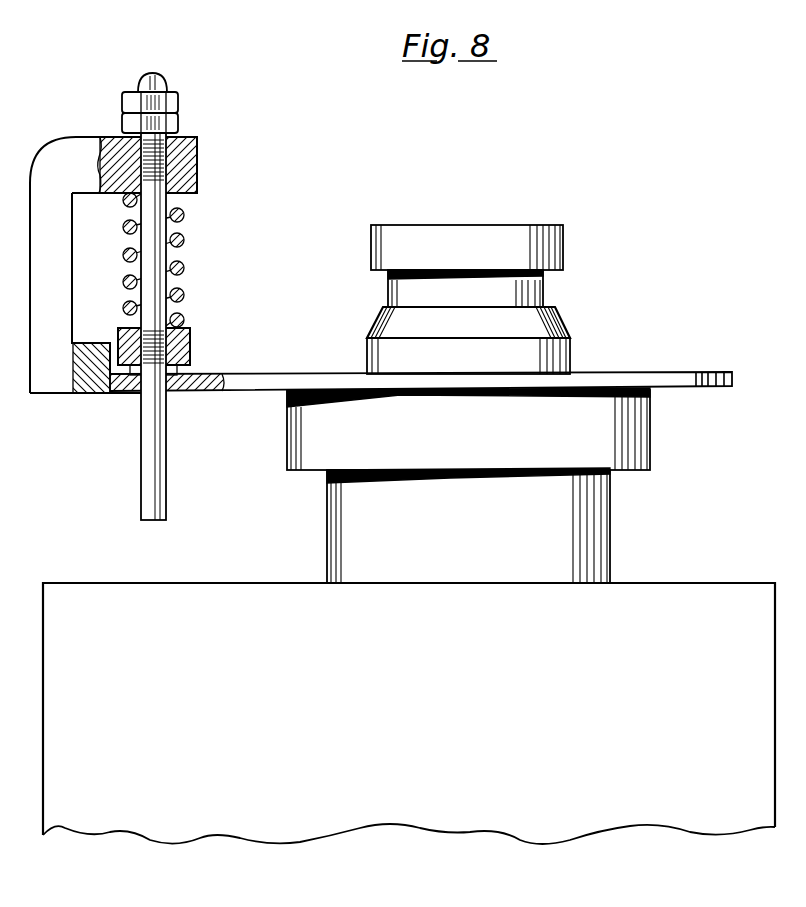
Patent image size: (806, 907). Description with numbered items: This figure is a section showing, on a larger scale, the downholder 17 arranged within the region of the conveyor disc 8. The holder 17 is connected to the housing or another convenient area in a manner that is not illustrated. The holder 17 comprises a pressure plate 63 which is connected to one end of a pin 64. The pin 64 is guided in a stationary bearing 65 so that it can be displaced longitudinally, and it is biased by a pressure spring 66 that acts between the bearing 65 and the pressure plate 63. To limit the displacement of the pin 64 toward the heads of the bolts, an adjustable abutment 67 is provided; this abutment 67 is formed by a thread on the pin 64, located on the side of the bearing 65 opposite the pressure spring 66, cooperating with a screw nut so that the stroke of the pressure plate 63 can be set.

The conveyor disc 8 is at (664, 378).
The downholder 17 is at (222, 290).
The pressure plate 63 is at (190, 351).
The pin 64 is at (173, 257).
The stationary bearing 65 is at (187, 172).
The pressure spring 66 is at (123, 258).
The adjustable abutment 67 is at (172, 129).